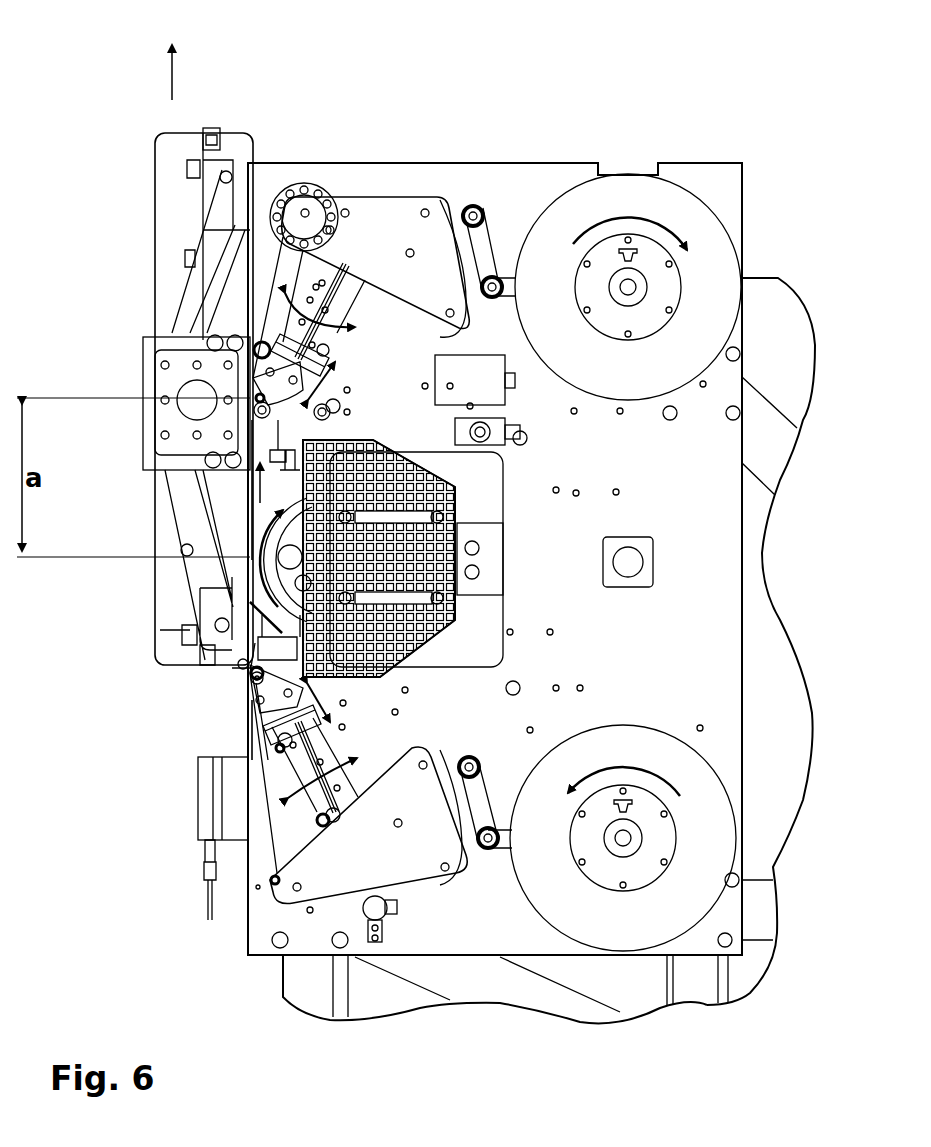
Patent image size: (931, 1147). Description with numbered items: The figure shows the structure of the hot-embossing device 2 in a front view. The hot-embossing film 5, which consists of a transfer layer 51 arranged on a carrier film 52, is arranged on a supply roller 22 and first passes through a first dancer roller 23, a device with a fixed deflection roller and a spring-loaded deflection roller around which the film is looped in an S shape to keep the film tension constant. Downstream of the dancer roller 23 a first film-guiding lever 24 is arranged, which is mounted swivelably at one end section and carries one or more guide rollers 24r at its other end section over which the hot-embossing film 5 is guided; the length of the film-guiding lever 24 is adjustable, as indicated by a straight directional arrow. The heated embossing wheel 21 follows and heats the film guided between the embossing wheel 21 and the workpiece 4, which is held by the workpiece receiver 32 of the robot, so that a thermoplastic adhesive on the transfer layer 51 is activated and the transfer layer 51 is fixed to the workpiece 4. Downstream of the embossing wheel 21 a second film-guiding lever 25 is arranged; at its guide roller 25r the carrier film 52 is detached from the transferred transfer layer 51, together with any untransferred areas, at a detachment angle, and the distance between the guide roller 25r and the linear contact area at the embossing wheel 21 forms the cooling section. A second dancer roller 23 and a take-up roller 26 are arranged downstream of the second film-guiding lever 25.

The hot-embossing device 2 is at (609, 63).
The workpiece 4 is at (262, 122).
The hot-embossing film 5 is at (245, 490).
The embossing wheel 21 is at (250, 585).
The supply roller 22 is at (626, 925).
The dancer roller 23 is at (505, 256).
The first film-guiding lever 24 is at (345, 758).
The guide roller 24r is at (258, 680).
The second film-guiding lever 25 is at (322, 325).
The guide roller 25r is at (256, 409).
The take-up roller 26 is at (630, 195).
The workpiece receiver 32 is at (162, 195).
The transfer layer 51 is at (218, 128).
The carrier film 52 is at (270, 297).